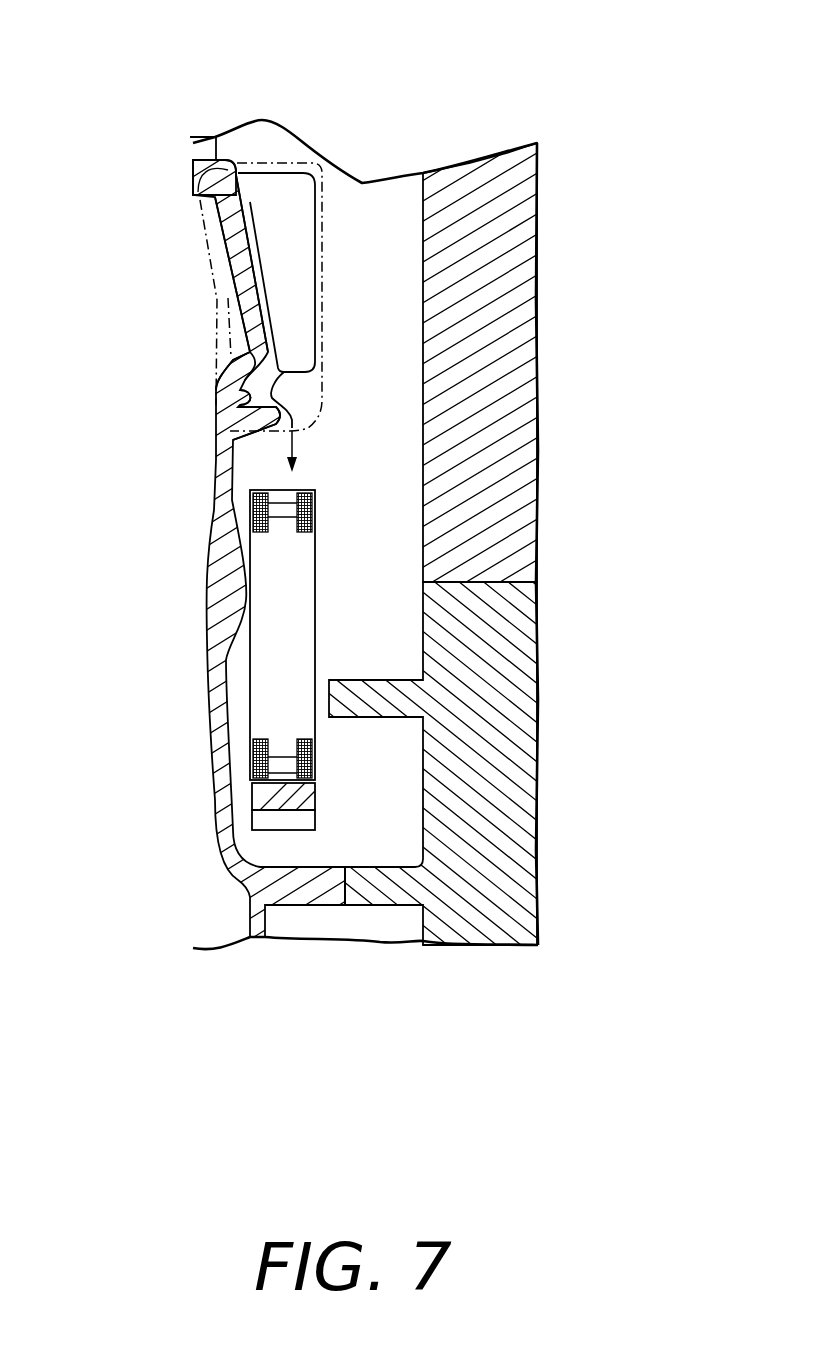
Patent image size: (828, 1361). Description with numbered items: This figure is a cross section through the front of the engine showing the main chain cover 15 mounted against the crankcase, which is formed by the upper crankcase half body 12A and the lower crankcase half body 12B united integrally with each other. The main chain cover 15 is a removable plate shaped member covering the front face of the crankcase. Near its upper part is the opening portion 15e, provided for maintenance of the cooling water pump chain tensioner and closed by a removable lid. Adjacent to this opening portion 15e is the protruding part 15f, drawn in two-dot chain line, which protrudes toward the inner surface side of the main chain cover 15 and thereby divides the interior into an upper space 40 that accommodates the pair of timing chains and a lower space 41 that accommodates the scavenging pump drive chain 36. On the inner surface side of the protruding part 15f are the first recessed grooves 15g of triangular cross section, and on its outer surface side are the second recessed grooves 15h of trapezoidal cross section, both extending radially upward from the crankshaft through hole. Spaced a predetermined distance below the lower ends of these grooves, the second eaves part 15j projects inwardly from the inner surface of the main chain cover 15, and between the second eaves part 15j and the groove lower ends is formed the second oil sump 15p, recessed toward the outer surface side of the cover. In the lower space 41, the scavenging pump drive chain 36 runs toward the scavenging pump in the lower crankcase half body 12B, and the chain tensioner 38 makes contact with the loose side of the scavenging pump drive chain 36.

The upper crankcase half body 12A is at (541, 342).
The lower crankcase half body 12B is at (541, 740).
The main chain cover 15 is at (205, 538).
The opening portion 15e is at (215, 137).
The protruding part 15f is at (217, 274).
The first recessed grooves 15g is at (252, 285).
The second recessed grooves 15h is at (228, 300).
The second oil sump 15p is at (238, 403).
The second eaves part 15j is at (250, 432).
The upper space 40 is at (285, 158).
The lower space 41 is at (308, 403).
The scavenging pump drive chain 36 is at (312, 751).
The chain tensioner 38 is at (283, 797).